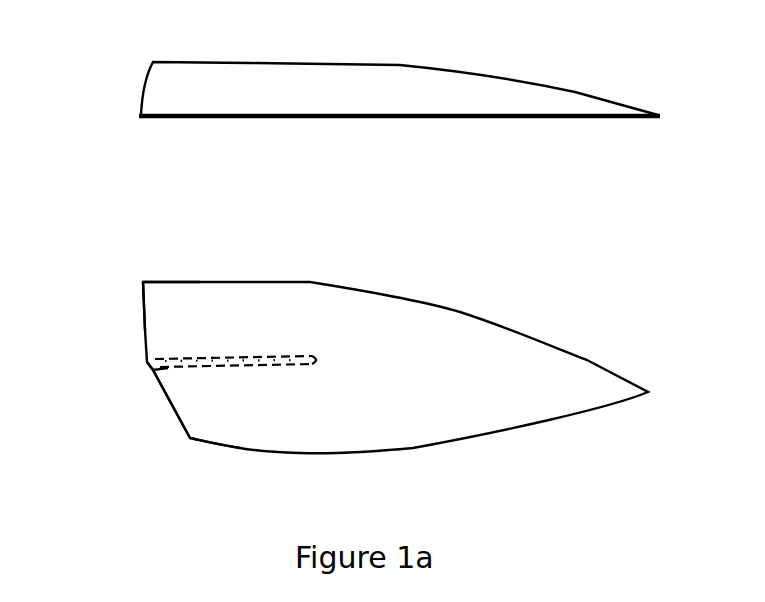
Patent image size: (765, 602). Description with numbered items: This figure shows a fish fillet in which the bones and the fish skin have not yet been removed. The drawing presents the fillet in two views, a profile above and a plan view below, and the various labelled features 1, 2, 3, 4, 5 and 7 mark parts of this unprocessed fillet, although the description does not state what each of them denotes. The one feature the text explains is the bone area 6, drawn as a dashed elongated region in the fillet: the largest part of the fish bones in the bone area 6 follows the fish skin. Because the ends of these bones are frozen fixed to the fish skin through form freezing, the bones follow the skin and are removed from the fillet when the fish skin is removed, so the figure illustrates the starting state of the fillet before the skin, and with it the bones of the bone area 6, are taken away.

The main body 1 is at (458, 343).
The base surface 2 is at (523, 116).
The upper profile surface 3 is at (455, 82).
The lower edge 4 is at (205, 423).
The opening 5 is at (165, 368).
The bone area 6 is at (158, 363).
The upper corner edge 7 is at (175, 300).